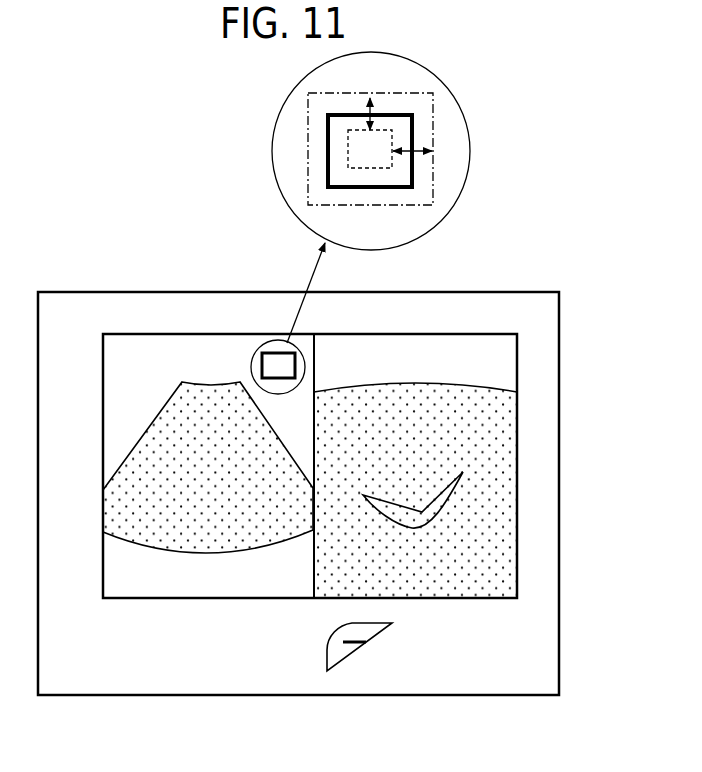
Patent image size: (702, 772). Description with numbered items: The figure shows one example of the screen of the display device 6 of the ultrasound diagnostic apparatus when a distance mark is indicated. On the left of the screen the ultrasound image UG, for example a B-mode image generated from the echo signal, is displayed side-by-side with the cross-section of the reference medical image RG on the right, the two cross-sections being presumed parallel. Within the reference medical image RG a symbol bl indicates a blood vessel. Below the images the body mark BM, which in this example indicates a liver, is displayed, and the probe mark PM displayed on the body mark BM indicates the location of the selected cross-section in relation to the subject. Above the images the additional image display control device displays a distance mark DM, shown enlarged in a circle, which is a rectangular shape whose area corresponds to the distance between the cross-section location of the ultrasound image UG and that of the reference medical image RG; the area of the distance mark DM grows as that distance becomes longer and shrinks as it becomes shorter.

The display device 6 is at (559, 397).
The ultrasound image UG is at (187, 403).
The distance mark DM is at (272, 352).
The reference medical image RG is at (435, 403).
The blood vessel bl is at (437, 507).
The body mark BM is at (375, 640).
The probe mark PM is at (352, 645).